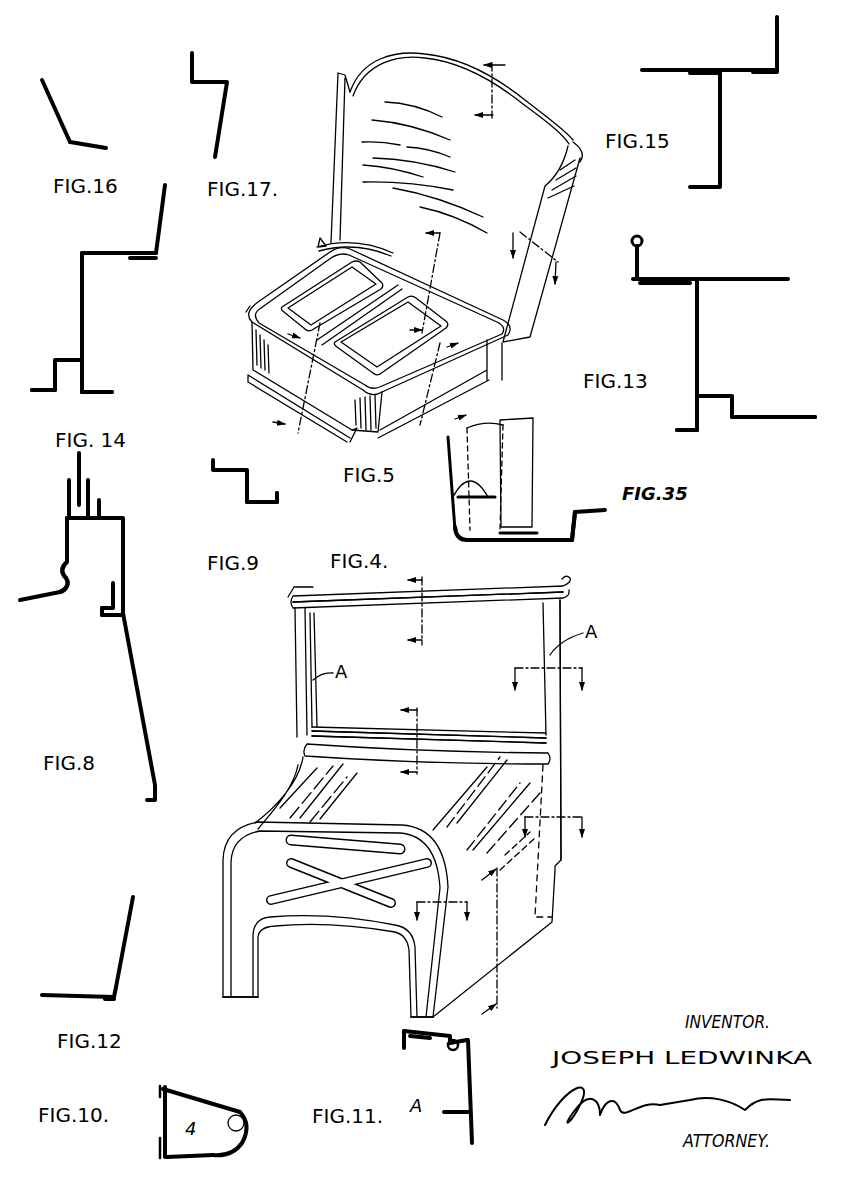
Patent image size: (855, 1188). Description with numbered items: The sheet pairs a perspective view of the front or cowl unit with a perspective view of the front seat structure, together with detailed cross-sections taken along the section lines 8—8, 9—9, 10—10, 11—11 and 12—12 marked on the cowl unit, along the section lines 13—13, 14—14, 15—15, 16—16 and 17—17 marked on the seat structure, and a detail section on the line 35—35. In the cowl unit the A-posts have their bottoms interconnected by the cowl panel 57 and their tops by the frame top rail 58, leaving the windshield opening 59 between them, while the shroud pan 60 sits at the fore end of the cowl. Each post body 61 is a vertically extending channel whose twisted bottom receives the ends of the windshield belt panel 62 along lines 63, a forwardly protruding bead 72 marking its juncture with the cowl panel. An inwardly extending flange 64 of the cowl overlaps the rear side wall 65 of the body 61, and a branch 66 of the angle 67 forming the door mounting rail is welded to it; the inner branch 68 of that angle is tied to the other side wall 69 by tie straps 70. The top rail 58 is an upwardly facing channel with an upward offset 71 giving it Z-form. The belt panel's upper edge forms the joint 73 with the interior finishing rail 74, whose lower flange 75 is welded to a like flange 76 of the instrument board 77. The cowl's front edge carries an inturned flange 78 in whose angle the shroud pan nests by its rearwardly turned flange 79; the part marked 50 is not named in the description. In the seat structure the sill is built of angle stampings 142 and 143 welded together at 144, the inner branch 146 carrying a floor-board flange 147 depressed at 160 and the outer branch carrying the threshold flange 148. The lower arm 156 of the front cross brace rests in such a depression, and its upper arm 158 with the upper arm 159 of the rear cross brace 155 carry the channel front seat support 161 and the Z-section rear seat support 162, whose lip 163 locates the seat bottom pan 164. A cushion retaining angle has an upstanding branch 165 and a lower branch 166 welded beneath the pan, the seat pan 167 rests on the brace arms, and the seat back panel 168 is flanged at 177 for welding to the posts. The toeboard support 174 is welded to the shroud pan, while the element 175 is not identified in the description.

In FIG. 4, the section line 8— 8 is at (394, 743).
In FIG. 4, the section line 9— 9 is at (402, 610).
In FIG. 4, the section line 10— 10 is at (551, 696).
In FIG. 4, the section line 11— 11 is at (555, 843).
In FIG. 4, the section line 12— 12 is at (449, 924).
In FIG. 5, the section line 13— 13 is at (286, 377).
In FIG. 5, the section line 14— 14 is at (418, 281).
In FIG. 5, the section line 15— 15 is at (456, 372).
In FIG. 5, the section line 16— 16 is at (533, 271).
In FIG. 5, the section line 17— 17 is at (480, 85).
In FIG. 4, the section line 35— 35 is at (477, 951).
In FIG. 4, the seat body 50 is at (304, 755).
In FIG. 35, the cowl panel 57 is at (448, 445).
In FIG. 4, the cowl panel 57 is at (527, 925).
In FIG. 12, the cowl panel 57 is at (133, 930).
In FIG. 11, the cowl panel 57 is at (475, 1133).
In FIG. 9, the frame top rail 58 is at (267, 500).
In FIG. 4, the frame top rail 58 is at (483, 593).
In FIG. 8, the windshield opening 59 is at (74, 467).
In FIG. 4, the windshield opening 59 is at (428, 808).
In FIG. 4, the shroud pan 60 is at (352, 903).
In FIG. 12, the shroud pan 60 is at (77, 976).
In FIG. 10, the body of A post 61 is at (203, 1158).
In FIG. 8, the windshield belt panel 62 is at (66, 550).
In FIG. 4, the windshield belt panel 62 is at (465, 737).
In FIG. 4, the connection lines 63 is at (305, 737).
In FIG. 11, the inwardly extending flange 64 is at (458, 1039).
In FIG. 10, the rear side wall 65 is at (248, 1126).
In FIG. 11, the rear side wall 65 is at (448, 1050).
In FIG. 10, the branch of angle 66 is at (197, 1103).
In FIG. 11, the branch of angle 66 is at (423, 1030).
In FIG. 10, the angle 67 is at (160, 1093).
In FIG. 11, the angle 67 is at (403, 1037).
In FIG. 11, the inner branch of angle 68 is at (418, 1048).
In FIG. 10, the side wall of channel 69 is at (160, 1143).
In FIG. 11, the side wall of channel 69 is at (447, 1115).
In FIG. 10, the tie straps 70 is at (160, 1115).
In FIG. 9, the upward offset 71 is at (240, 477).
In FIG. 8, the forwardly protruding bead 72 is at (72, 574).
In FIG. 4, the forwardly protruding bead 72 is at (440, 747).
In FIG. 8, the joint 73 is at (103, 493).
In FIG. 8, the interior finishing rail 74 is at (127, 537).
In FIG. 8, the forwardly extending flange 75 is at (115, 583).
In FIG. 8, the flange of instrument board 76 is at (118, 618).
In FIG. 8, the instrument board 77 is at (147, 714).
In FIG. 4, the inturned flange 78 is at (228, 935).
In FIG. 12, the inturned flange 78 is at (107, 999).
In FIG. 12, the rearwardly turned flange 79 is at (110, 985).
In FIG. 35, the outer angle stamping 142 is at (478, 543).
In FIG. 4, the outer angle stamping 142 is at (428, 576).
In FIG. 35, the inner angle stamping 143 is at (553, 532).
In FIG. 35, the weld 144 is at (523, 527).
In FIG. 35, the upper branch of inner member 146 is at (582, 527).
In FIG. 35, the floor board supporting flange 147 is at (593, 507).
In FIG. 35, the threshold flange 148 is at (460, 486).
In FIG. 14, the rear cross brace 155 is at (87, 377).
In FIG. 13, the lower arm of front cross brace 156 is at (687, 428).
In FIG. 13, the upper arm of front cross brace 158 is at (728, 419).
In FIG. 14, the upper arm of rear cross brace 159 is at (50, 362).
In FIG. 14, the depression 160 is at (109, 407).
In FIG. 13, the depression 160 is at (697, 433).
In FIG. 5, the depression 160 is at (258, 383).
In FIG. 15, the front seat support 161 is at (723, 150).
In FIG. 13, the front seat support 161 is at (702, 348).
In FIG. 5, the front seat support 161 is at (333, 405).
In FIG. 14, the rear seat support 162 is at (85, 318).
In FIG. 14, the upwardly extending flange 163 is at (155, 242).
In FIG. 5, the upwardly extending flange 163 is at (392, 250).
In FIG. 15, the front seat bottom pan 164 is at (735, 68).
In FIG. 13, the front seat bottom pan 164 is at (752, 276).
In FIG. 5, the front seat bottom pan 164 is at (250, 311).
In FIG. 15, the upstanding branch 165 is at (780, 44).
In FIG. 13, the upstanding branch 165 is at (630, 248).
In FIG. 5, the upstanding branch 165 is at (270, 290).
In FIG. 15, the lower branch 166 is at (690, 75).
In FIG. 13, the lower branch 166 is at (693, 284).
In FIG. 14, the seat pan 167 is at (42, 404).
In FIG. 13, the seat pan 167 is at (787, 420).
In FIG. 16, the seat back panel 168 is at (62, 112).
In FIG. 17, the seat back panel 168 is at (227, 117).
In FIG. 14, the seat back panel 168 is at (162, 245).
In FIG. 5, the seat back panel 168 is at (530, 135).
In FIG. 35, the toeboard support 174 is at (512, 428).
In FIG. 35, the post plate 175 is at (515, 480).
In FIG. 16, the flanges 177 is at (97, 143).
In FIG. 5, the flanges 177 is at (340, 140).